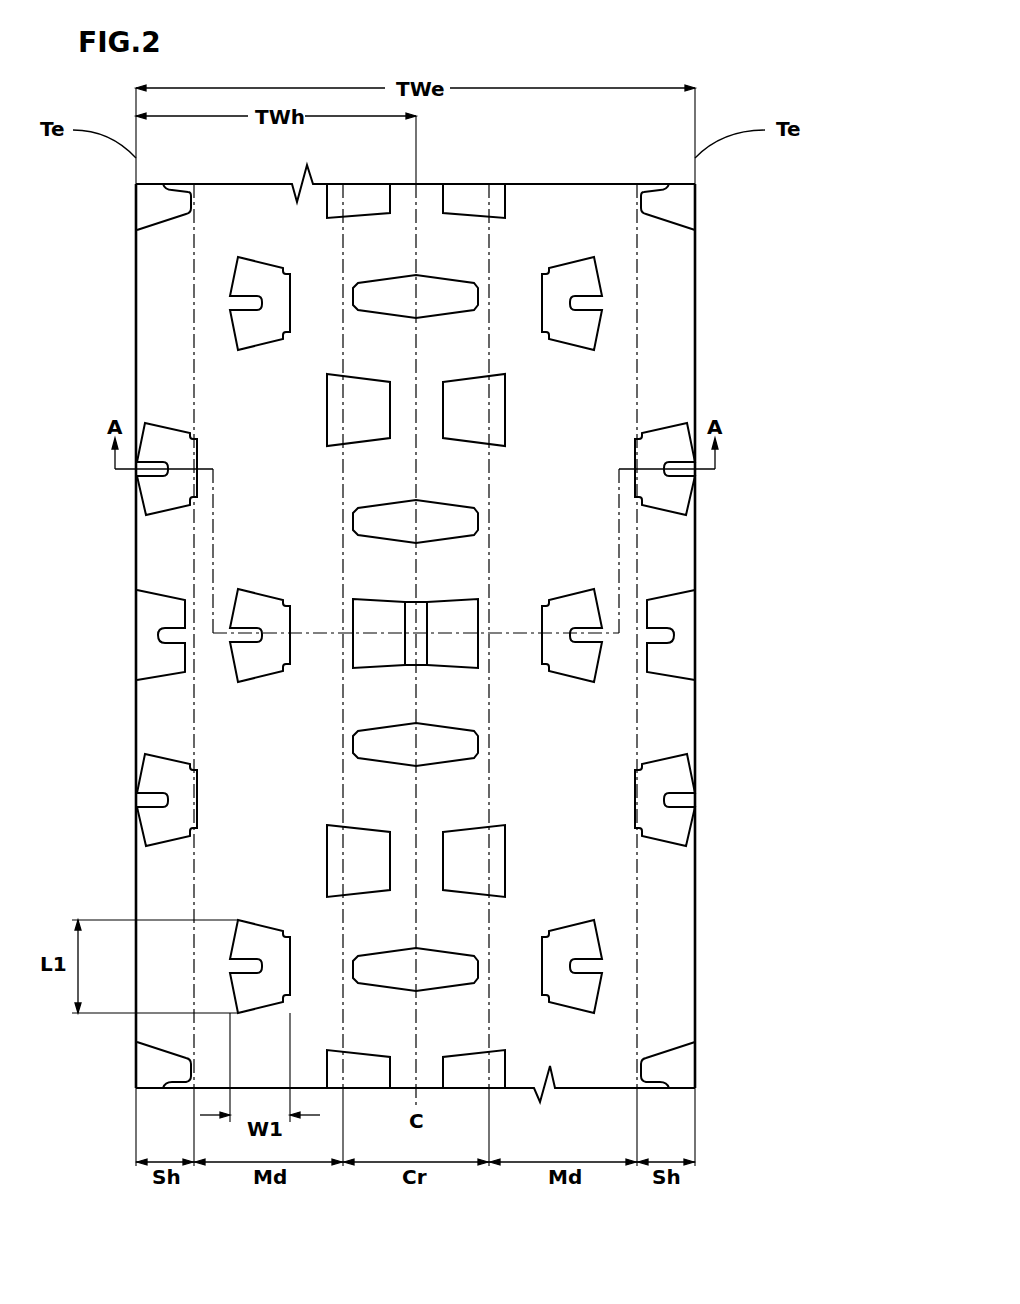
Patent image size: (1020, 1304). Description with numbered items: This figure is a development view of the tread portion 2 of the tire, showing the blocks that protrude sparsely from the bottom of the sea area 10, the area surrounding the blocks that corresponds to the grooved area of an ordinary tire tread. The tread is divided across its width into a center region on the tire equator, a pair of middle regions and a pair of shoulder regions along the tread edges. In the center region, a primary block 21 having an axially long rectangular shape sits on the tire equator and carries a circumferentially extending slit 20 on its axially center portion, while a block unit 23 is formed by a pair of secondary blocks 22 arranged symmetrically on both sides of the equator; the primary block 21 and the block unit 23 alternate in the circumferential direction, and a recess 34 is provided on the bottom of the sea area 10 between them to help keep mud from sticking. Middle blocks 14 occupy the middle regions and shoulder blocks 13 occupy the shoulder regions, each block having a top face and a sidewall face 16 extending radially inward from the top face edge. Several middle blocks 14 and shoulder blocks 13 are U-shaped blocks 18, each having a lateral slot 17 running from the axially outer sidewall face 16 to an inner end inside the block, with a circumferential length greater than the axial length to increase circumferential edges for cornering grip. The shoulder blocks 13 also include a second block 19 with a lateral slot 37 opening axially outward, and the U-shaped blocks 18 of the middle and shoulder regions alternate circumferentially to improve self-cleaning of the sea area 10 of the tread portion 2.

The tread portion 2 is at (586, 182).
The sea area 10 is at (556, 222).
The shoulder block 13 is at (683, 430).
The middle block 14 is at (582, 278).
The sidewall face 16 is at (250, 266).
The lateral slot 17 is at (232, 303).
The U-shaped block 18 is at (248, 333).
The second block 19 is at (150, 611).
The slit 20 is at (425, 668).
The primary block 21 is at (468, 612).
The secondary block 22 is at (365, 410).
The block unit 23 is at (752, 286).
The recess 34 is at (428, 292).
The lateral slot 37 is at (177, 637).